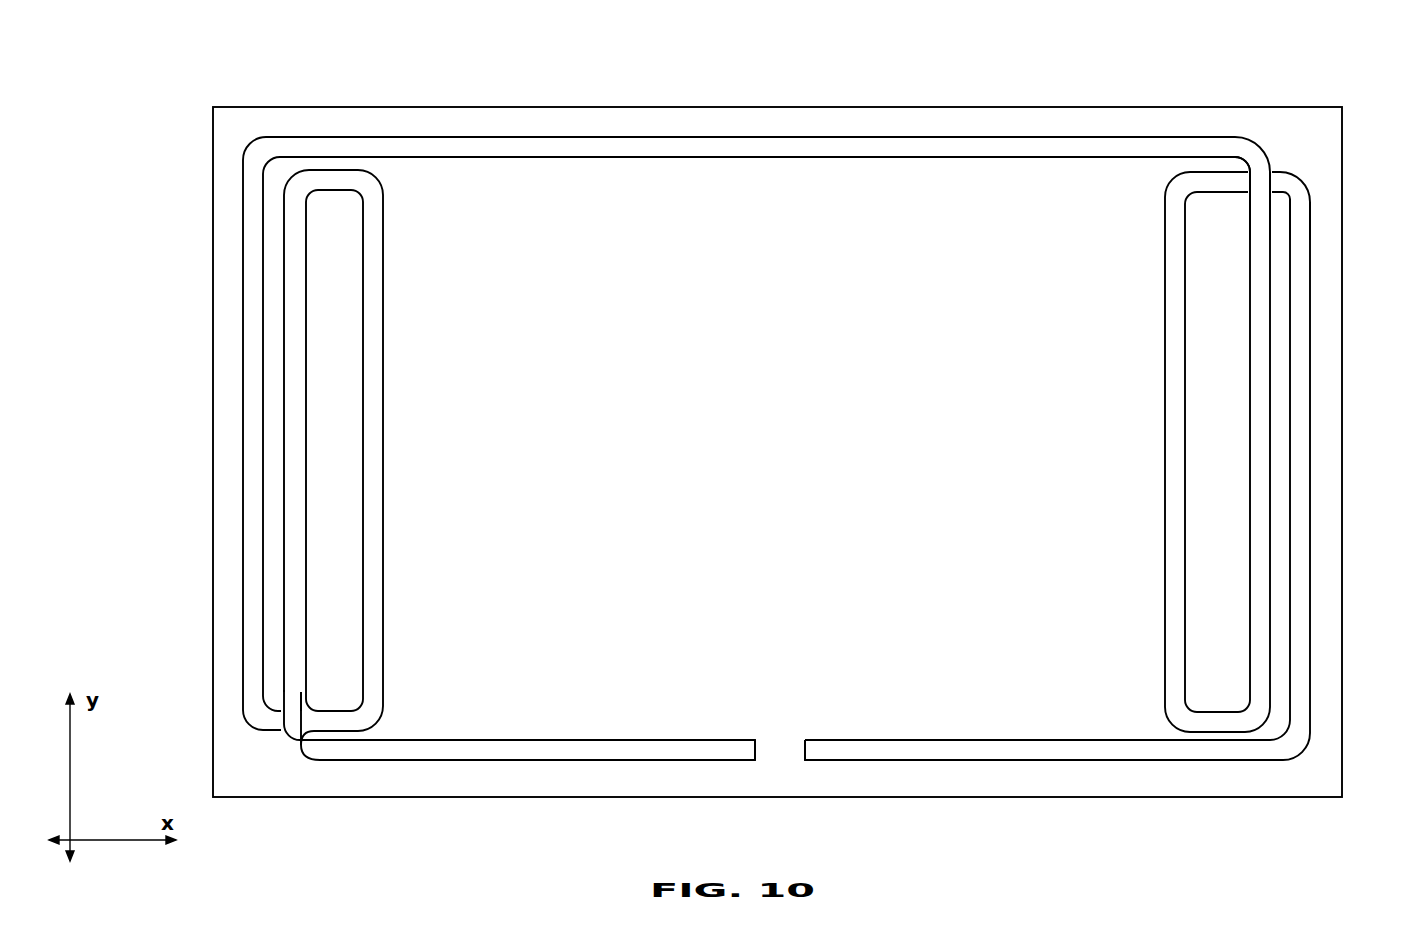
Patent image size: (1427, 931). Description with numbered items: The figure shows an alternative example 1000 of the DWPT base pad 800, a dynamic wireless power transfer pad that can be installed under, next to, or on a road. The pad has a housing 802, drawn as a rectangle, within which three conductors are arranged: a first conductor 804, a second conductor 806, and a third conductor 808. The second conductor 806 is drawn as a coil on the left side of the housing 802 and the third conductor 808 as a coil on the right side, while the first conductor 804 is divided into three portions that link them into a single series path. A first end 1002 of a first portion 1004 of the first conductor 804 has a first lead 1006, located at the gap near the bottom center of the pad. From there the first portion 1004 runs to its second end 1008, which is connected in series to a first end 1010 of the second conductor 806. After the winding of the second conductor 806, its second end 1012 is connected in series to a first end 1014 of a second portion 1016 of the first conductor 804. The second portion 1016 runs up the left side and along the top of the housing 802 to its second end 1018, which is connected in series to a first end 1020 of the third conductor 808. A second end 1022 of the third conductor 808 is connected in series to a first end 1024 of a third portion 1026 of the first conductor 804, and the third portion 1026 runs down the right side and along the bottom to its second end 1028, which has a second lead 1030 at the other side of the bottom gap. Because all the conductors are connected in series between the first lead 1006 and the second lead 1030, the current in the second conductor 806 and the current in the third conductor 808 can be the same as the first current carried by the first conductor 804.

The DWPT base pad 800 is at (754, 450).
The alternative example of the DWPT base pad 1000 is at (190, 55).
The housing 802 is at (1325, 143).
The first conductor 804 is at (788, 402).
The second conductor 806 is at (372, 430).
The third conductor 808 is at (1174, 426).
The first end of the first portion of the first conductor 1002 is at (720, 708).
The first portion of the first conductor 1004 is at (558, 742).
The first lead 1006 is at (753, 747).
The second end of the first portion of the first conductor 1008 is at (288, 738).
The first end of the second conductor 1010 is at (298, 697).
The second end of the second conductor 1012 is at (352, 722).
The first end of the second portion of the first conductor 1014 is at (266, 720).
The second portion of the first conductor 1016 is at (803, 147).
The second end of the second portion of the first conductor 1018 is at (1267, 160).
The first end of the third conductor 1020 is at (1258, 207).
The second end of the third conductor 1022 is at (1238, 178).
The first end of the third portion of the first conductor 1024 is at (1285, 183).
The third portion of the first conductor 1026 is at (975, 745).
The second end of the third portion of the first conductor 1028 is at (831, 723).
The second lead 1030 is at (835, 712).